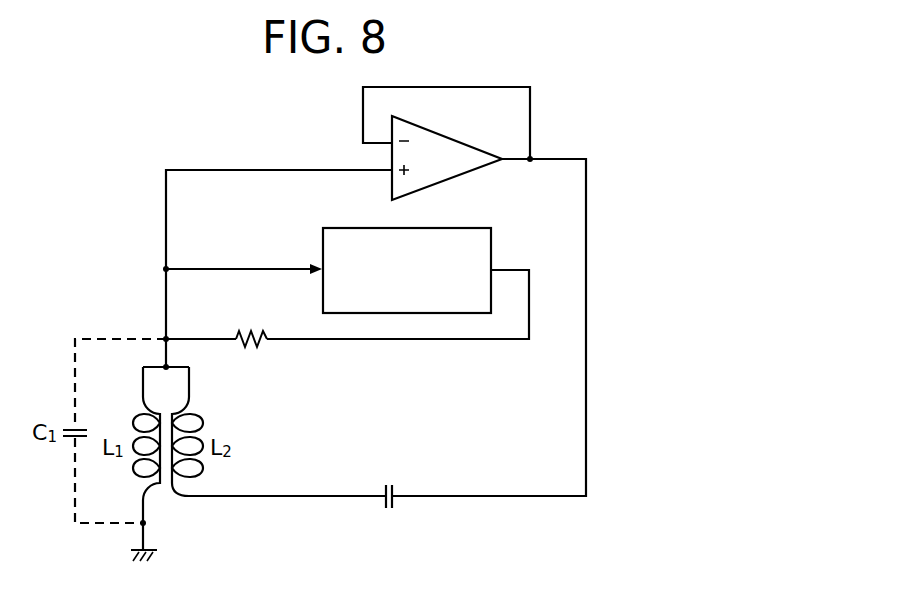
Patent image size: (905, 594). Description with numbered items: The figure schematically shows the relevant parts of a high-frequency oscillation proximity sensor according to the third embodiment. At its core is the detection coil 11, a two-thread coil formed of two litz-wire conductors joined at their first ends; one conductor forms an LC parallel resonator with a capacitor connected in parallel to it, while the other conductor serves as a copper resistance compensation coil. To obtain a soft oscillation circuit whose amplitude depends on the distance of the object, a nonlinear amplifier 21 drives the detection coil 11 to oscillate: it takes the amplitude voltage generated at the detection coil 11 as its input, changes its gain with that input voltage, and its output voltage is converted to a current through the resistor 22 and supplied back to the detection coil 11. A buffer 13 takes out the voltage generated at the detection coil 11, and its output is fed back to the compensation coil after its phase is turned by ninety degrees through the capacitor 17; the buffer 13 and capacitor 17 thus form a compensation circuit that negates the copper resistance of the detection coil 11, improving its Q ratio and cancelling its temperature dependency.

The detection coil 11 is at (216, 414).
The buffer 13 is at (454, 167).
The capacitor 17 is at (394, 486).
The nonlinear amplifier 21 is at (320, 239).
The resistor 22 is at (254, 331).